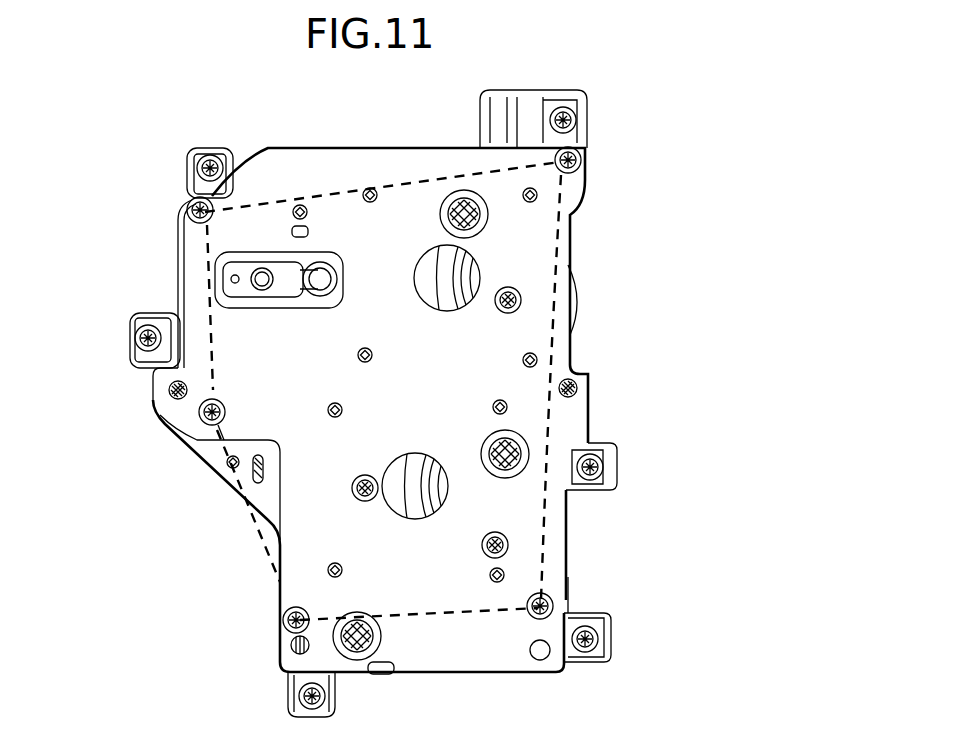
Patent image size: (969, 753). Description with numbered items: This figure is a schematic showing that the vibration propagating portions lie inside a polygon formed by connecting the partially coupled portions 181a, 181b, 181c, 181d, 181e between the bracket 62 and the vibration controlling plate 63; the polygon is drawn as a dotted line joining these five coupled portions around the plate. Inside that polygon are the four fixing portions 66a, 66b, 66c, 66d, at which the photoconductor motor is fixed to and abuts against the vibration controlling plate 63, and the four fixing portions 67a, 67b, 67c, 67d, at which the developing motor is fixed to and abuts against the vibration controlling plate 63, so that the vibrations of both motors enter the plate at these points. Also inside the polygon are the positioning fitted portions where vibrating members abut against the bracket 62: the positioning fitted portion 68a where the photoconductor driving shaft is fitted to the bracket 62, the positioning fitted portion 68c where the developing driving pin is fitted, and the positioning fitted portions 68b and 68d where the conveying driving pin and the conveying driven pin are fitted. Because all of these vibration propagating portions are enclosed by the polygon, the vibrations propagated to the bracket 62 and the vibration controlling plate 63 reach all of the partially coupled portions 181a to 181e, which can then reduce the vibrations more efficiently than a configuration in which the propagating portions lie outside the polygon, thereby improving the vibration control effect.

The bracket 62 is at (215, 472).
The vibration controlling plate 63 is at (463, 676).
The fixing portion 66a is at (370, 203).
The fixing portion 66b is at (366, 347).
The fixing portion 66c is at (522, 361).
The fixing portion 66d is at (530, 203).
The fixing portion 67a is at (343, 410).
The fixing portion 67b is at (343, 570).
The fixing portion 67c is at (492, 580).
The fixing portion 67d is at (492, 407).
The positioning fitted portion 68a is at (342, 300).
The positioning fitted portion 68b is at (500, 310).
The positioning fitted portion 68c is at (352, 488).
The positioning fitted portion 68d is at (493, 533).
The partially coupled portion 181a is at (190, 204).
The partially coupled portion 181b is at (200, 418).
The partially coupled portion 181c is at (282, 630).
The partially coupled portion 181d is at (556, 607).
The partially coupled portion 181e is at (582, 154).